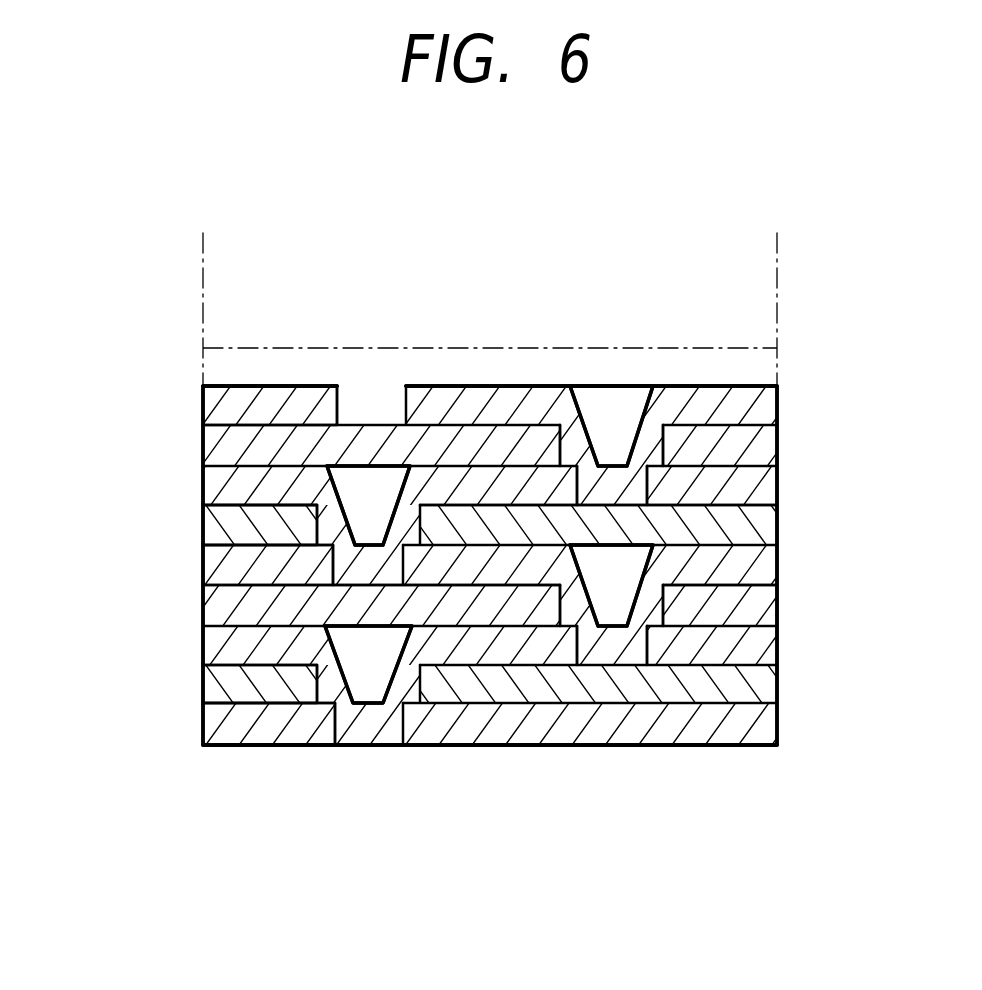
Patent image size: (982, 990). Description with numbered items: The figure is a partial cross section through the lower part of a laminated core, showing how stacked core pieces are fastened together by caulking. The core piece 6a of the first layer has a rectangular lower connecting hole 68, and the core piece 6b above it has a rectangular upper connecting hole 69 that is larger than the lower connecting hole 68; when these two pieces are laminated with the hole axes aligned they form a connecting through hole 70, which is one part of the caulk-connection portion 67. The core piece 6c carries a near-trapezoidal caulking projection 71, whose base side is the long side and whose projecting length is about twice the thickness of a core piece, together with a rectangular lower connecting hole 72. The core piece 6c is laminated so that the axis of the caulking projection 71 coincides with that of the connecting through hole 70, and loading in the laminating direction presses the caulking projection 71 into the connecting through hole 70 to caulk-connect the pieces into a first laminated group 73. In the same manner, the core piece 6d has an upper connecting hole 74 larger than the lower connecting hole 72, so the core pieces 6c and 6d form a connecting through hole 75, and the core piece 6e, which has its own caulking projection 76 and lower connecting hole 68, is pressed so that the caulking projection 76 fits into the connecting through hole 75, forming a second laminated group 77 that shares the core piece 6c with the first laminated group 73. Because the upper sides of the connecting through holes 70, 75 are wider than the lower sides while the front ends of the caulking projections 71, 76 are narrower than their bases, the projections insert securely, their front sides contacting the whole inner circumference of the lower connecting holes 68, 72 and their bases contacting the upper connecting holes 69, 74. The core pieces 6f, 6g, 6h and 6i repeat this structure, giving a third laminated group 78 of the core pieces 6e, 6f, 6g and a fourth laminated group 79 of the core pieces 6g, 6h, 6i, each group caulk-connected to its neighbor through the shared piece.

The core piece 6a is at (208, 727).
The core piece 6b is at (220, 687).
The core piece 6c is at (220, 645).
The core piece 6d is at (222, 605).
The core piece 6e is at (217, 560).
The core piece 6f is at (220, 532).
The core piece 6g is at (225, 490).
The core piece 6h is at (222, 452).
The core piece 6i is at (227, 412).
The caulk-connection portion 67 is at (352, 762).
The lower connecting hole 68 is at (323, 569).
The upper connecting hole 69 is at (312, 520).
The connecting through hole 70 is at (430, 488).
The caulking projection 71 is at (371, 492).
The lower connecting hole 72 is at (575, 497).
The first laminated group 73 is at (800, 627).
The upper connecting hole 74 is at (557, 449).
The connecting through hole 75 is at (668, 408).
The caulking projection 76 is at (582, 432).
The second laminated group 77 is at (822, 547).
The third laminated group 78 is at (800, 467).
The fourth laminated group 79 is at (822, 387).